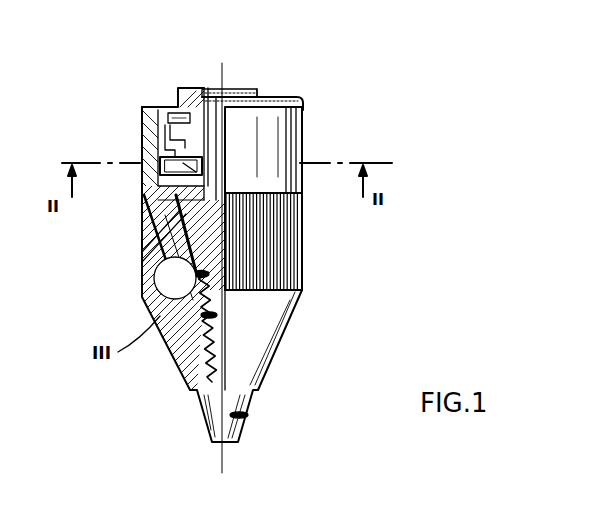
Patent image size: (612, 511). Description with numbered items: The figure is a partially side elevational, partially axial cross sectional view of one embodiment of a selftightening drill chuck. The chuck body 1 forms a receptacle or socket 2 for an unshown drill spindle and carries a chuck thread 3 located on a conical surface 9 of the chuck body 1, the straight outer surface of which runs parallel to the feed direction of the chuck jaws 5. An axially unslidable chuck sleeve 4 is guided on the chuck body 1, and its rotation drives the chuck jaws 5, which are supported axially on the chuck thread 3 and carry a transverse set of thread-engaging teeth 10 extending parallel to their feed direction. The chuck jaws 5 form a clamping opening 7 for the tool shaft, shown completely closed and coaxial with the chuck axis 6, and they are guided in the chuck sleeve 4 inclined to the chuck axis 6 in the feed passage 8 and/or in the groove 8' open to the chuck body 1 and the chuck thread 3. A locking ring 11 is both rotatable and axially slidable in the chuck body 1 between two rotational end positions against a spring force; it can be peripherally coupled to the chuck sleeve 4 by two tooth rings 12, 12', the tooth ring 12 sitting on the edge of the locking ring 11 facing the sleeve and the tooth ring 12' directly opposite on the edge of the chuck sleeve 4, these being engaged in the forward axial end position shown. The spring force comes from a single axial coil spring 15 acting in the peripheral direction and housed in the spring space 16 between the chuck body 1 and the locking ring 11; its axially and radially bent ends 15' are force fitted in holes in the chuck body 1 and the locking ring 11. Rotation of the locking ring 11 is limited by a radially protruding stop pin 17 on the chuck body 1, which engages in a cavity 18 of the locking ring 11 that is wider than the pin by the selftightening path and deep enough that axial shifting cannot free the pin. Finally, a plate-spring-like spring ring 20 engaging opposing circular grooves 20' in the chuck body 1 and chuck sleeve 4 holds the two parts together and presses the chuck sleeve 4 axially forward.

The chuck body 1 is at (158, 270).
The receptacle or socket 2 is at (208, 88).
The chuck thread 3 is at (200, 266).
The chuck sleeve 4 is at (262, 333).
The chuck jaws 5 is at (207, 372).
The chuck axis 6 is at (222, 64).
The clamping opening 7 is at (247, 415).
The feed passage 8 is at (116, 268).
The groove 8' is at (283, 331).
The conical surface 9 is at (200, 272).
The thread-engaging teeth 10 is at (215, 315).
The locking ring 11 is at (141, 118).
The tooth ring 12 is at (135, 161).
The tooth ring 12' is at (147, 223).
The axial coil spring 15 is at (278, 69).
The spring ends 15' is at (248, 102).
The spring space 16 is at (170, 136).
The stop pin 17 is at (183, 163).
The cavity 18 is at (202, 175).
The spring ring 20 is at (254, 248).
The circular grooves 20' is at (124, 252).